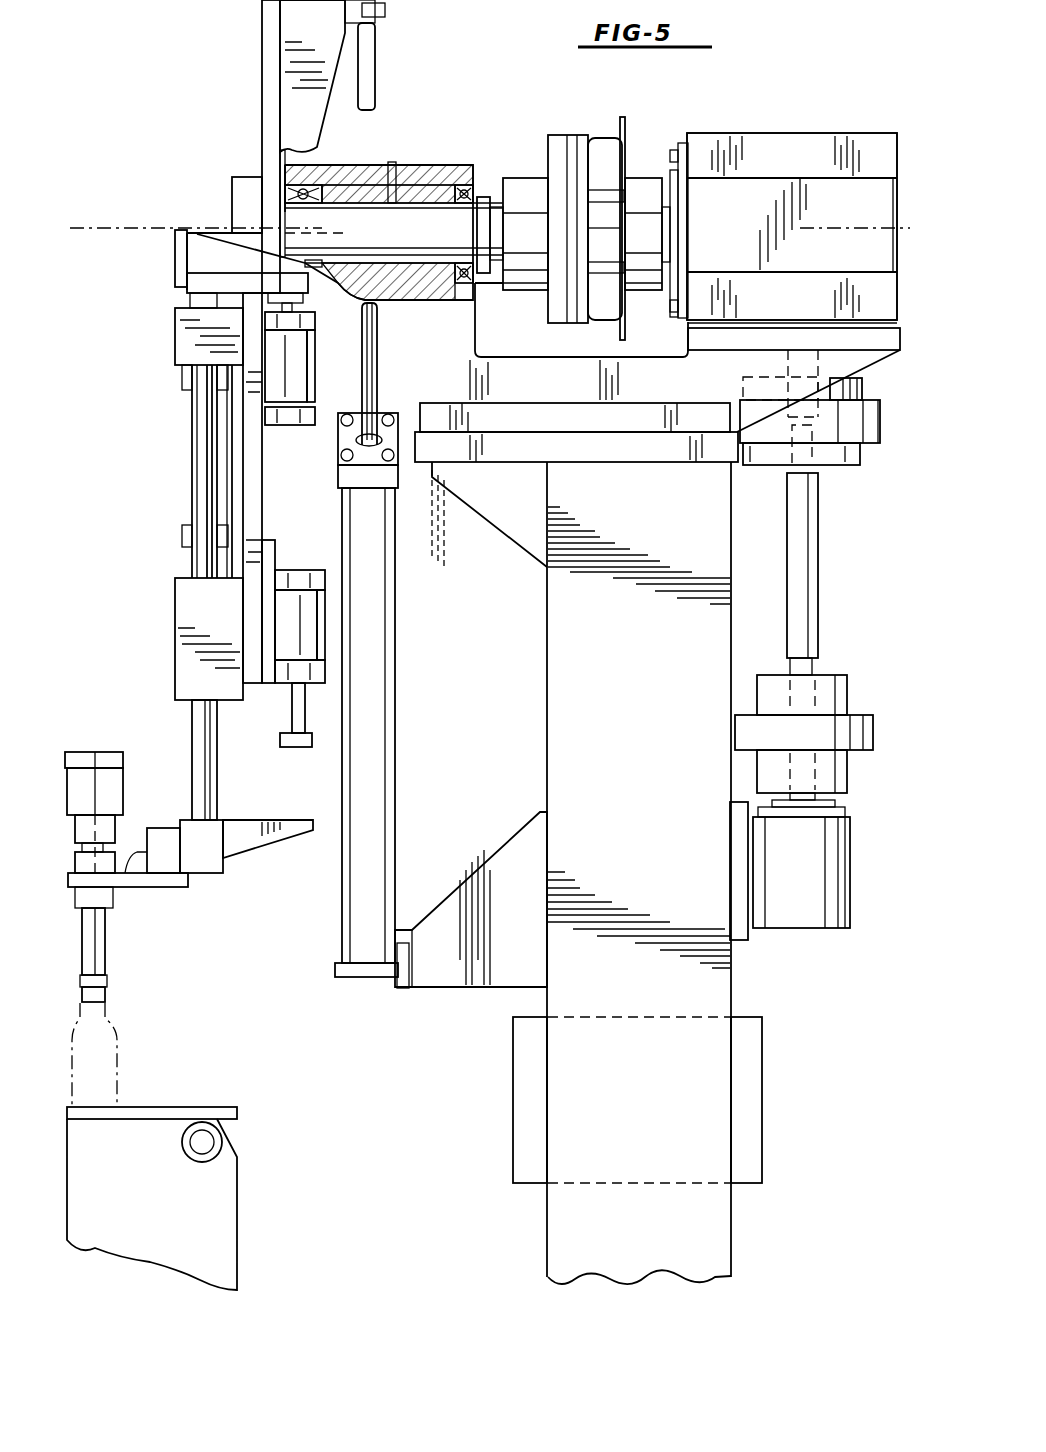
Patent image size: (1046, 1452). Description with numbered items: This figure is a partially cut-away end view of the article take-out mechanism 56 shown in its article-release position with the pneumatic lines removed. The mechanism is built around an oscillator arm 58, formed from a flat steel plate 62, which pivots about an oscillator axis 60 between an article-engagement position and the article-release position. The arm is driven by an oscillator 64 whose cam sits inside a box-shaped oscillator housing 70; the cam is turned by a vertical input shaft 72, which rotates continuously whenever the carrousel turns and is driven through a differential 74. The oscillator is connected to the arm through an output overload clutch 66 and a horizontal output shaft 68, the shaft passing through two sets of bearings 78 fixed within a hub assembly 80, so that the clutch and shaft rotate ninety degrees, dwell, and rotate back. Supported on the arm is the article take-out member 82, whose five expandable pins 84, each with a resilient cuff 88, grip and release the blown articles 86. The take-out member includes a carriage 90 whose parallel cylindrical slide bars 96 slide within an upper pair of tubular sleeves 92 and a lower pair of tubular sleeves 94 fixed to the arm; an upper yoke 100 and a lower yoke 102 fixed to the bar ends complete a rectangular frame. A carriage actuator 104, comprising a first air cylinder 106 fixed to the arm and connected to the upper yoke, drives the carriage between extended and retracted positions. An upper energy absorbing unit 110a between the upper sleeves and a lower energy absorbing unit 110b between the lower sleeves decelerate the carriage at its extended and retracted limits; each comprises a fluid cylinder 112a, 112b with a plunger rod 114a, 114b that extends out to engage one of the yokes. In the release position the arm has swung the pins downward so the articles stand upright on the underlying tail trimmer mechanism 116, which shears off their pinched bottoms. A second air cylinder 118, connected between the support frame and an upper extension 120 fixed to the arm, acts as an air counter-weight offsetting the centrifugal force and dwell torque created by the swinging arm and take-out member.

The article take-out mechanism 56 is at (172, 88).
The oscillator arm 58 is at (240, 190).
The oscillator axis 60 is at (112, 240).
The flat steel plate 62 is at (200, 490).
The oscillator 64 is at (792, 128).
The output overload clutch 66 is at (562, 150).
The horizontal output shaft 68 is at (420, 228).
The oscillator housing 70 is at (836, 200).
The vertical input shaft 72 is at (822, 583).
The differential 74 is at (808, 908).
The bearings 78 is at (328, 192).
The hub assembly 80 is at (476, 196).
The article take-out member 82 is at (185, 728).
The expandable pins 84 is at (150, 780).
The blown articles 86 is at (117, 1043).
The resilient cuff 88 is at (105, 995).
The carriage 90 is at (222, 801).
The upper pair of parallel tubular sleeves 92 is at (186, 345).
The lower pair of parallel tubular sleeves 94 is at (186, 598).
The cylindrical slide bars 96 is at (243, 508).
The upper yoke 100 is at (205, 247).
The lower yoke 102 is at (250, 845).
The carriage actuator 104 is at (178, 407).
The first air cylinder 106 is at (193, 460).
The upper energy absorbing unit 110a is at (315, 374).
The lower energy absorbing unit 110b is at (325, 614).
The fluid cylinder 112a is at (283, 390).
The fluid cylinder 112b is at (318, 650).
The plunger rod 114a is at (300, 305).
The plunger rod 114b is at (305, 720).
The tail trimmer mechanism 116 is at (200, 1107).
The second air cylinder 118 is at (385, 840).
The upper extension 120 is at (292, 25).